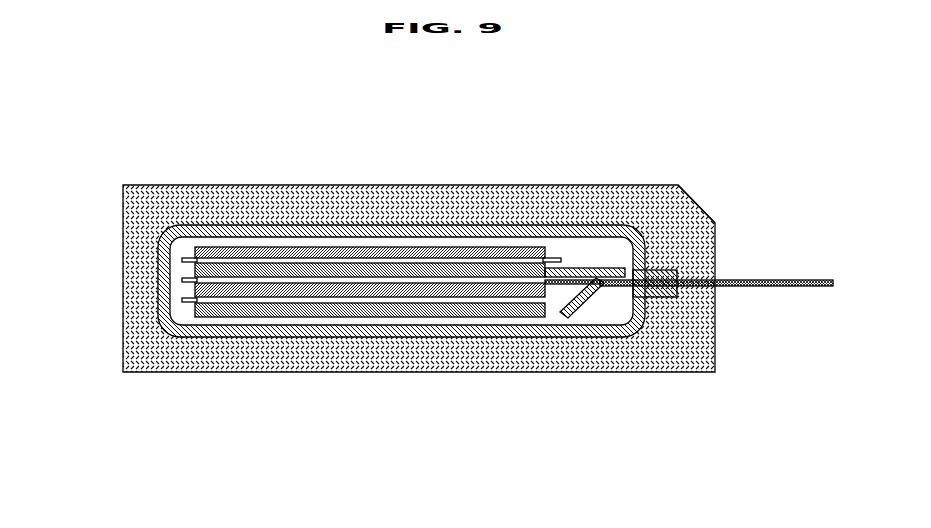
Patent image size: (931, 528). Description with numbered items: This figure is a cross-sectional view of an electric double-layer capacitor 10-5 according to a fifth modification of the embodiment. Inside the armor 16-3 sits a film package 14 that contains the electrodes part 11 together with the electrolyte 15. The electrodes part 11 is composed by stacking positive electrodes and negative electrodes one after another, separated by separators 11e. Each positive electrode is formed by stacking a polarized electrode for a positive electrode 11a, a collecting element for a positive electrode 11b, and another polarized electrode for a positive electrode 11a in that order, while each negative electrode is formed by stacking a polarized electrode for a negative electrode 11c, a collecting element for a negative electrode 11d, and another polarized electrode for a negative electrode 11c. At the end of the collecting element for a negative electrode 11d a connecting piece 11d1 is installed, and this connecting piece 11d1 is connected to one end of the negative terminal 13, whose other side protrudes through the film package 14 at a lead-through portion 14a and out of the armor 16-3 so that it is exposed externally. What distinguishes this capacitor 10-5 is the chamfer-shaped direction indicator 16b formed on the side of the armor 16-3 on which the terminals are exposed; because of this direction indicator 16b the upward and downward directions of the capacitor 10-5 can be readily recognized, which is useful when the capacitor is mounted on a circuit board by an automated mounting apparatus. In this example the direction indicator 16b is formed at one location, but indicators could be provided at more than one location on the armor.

The electric double-layer capacitor 10-5 is at (156, 181).
The armor 16-3 is at (205, 196).
The direction indicator 16b is at (698, 205).
The film package 14 is at (489, 232).
The case lead-through portion 14a is at (668, 272).
The electrolyte 15 is at (617, 248).
The negative terminal 13 is at (781, 280).
The electrodes part 11 is at (250, 300).
The polarized electrode for a positive electrode 11a is at (290, 252).
The collecting element for a positive electrode 11b is at (328, 270).
The polarized electrode for a negative electrode 11c is at (372, 289).
The collecting element for a negative electrode 11d is at (405, 310).
The connecting piece 11d1 is at (598, 296).
The separator 11e is at (182, 260).